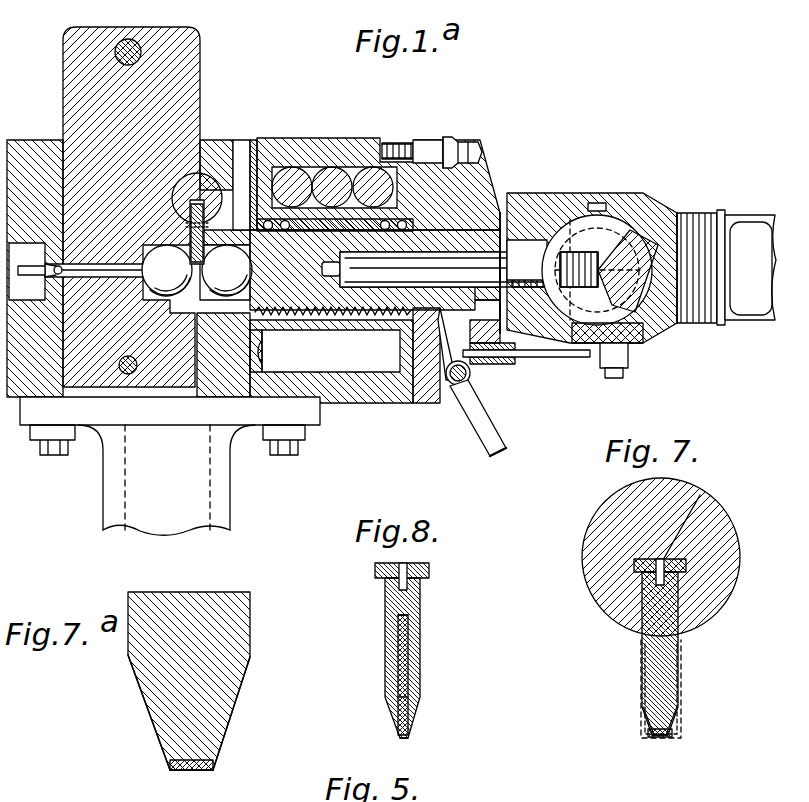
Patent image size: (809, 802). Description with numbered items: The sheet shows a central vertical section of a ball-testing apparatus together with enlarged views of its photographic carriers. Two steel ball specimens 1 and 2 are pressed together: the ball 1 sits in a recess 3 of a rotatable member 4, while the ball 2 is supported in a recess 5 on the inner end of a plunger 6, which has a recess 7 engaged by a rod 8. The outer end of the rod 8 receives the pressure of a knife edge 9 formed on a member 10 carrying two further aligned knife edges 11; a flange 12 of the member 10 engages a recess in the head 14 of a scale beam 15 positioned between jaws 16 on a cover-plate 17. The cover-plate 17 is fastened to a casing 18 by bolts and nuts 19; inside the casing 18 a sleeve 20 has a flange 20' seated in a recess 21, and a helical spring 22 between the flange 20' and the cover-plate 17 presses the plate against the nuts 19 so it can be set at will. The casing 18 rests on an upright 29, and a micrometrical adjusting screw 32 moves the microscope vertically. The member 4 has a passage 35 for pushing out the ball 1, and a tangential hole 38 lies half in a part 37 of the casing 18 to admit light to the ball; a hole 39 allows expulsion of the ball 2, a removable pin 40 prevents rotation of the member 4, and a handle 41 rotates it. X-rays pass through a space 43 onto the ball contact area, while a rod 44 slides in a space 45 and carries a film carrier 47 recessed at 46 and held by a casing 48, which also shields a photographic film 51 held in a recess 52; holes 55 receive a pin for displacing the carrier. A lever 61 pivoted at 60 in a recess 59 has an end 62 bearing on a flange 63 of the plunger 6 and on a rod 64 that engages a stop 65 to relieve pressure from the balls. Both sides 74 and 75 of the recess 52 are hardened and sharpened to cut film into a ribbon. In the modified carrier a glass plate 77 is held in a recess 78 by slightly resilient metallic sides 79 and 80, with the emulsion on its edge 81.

In FIG. 1A, the ball 1 is at (167, 270).
In FIG. 1A, the ball 2 is at (226, 272).
In FIG. 1A, the recess 3 is at (118, 278).
In FIG. 1A, the rotatable member 4 is at (193, 63).
In FIG. 1A, the recess 5 is at (258, 395).
In FIG. 1A, the plunger 6 is at (375, 270).
In FIG. 1A, the recess 7 is at (372, 395).
In FIG. 1A, the rod 8 is at (470, 269).
In FIG. 1A, the knife edge 9 is at (612, 282).
In FIG. 1A, the member 10 is at (668, 328).
In FIG. 1A, the knife edges 11 is at (590, 200).
In FIG. 1A, the flange 12 is at (638, 335).
In FIG. 1A, the head 14 is at (545, 200).
In FIG. 1A, the scale beam 15 is at (726, 267).
In FIG. 1A, the jaws 16 is at (503, 230).
In FIG. 1A, the cover-plate 17 is at (425, 150).
In FIG. 1A, the casing 18 is at (318, 150).
In FIG. 1A, the bolts and nuts 19 is at (470, 142).
In FIG. 1A, the sleeve 20 is at (332, 238).
In FIG. 1A, the flange 20' is at (292, 160).
In FIG. 1A, the recess 21 is at (254, 145).
In FIG. 1A, the helical spring 22 is at (375, 167).
In FIG. 1A, the upright 29 is at (167, 480).
In FIG. 1A, the micrometrical adjusting screw 32 is at (170, 411).
In FIG. 1A, the passage 35 is at (55, 268).
In FIG. 1A, the part 37 is at (52, 130).
In FIG. 1A, the hole 38 is at (50, 272).
In FIG. 1A, the hole 39 is at (242, 150).
In FIG. 1A, the removable pin 40 is at (128, 374).
In FIG. 1A, the handle 41 is at (116, 48).
In FIG. 1A, the space 43 is at (196, 390).
In FIG. 1A, the rod 44 is at (185, 182).
In FIG. 7, the rod 44 is at (598, 600).
In FIG. 1A, the space 45 is at (210, 150).
In FIG. 7, the recess 46 is at (640, 665).
In FIG. 1A, the film carrier 47 is at (188, 238).
In FIG. 7, the film carrier 47 is at (660, 648).
In FIG. 7A, the film carrier 47 is at (190, 605).
In FIG. 7, the casing 48 is at (680, 705).
In FIG. 7, the photographic film 51 is at (655, 740).
In FIG. 7A, the photographic film 51 is at (190, 772).
In FIG. 7, the recess 52 is at (668, 740).
In FIG. 7A, the recess 52 is at (182, 752).
In FIG. 7, the holes 55 is at (700, 494).
In FIG. 1A, the recess 59 is at (448, 385).
In FIG. 1A, the pivot 60 is at (462, 385).
In FIG. 1A, the lever 61 is at (500, 440).
In FIG. 1A, the end 62 is at (428, 400).
In FIG. 1A, the flange 63 is at (488, 298).
In FIG. 1A, the rod 64 is at (565, 360).
In FIG. 1A, the stop 65 is at (622, 358).
In FIG. 7, the side 74 is at (642, 710).
In FIG. 7A, the side 74 is at (148, 713).
In FIG. 7, the side 75 is at (675, 716).
In FIG. 7A, the side 75 is at (233, 710).
In FIG. 8, the glass plate 77 is at (410, 697).
In FIG. 8, the recess 78 is at (410, 625).
In FIG. 8, the metallic side 79 is at (388, 630).
In FIG. 8, the metallic side 80 is at (425, 675).
In FIG. 8, the edge 81 is at (404, 739).